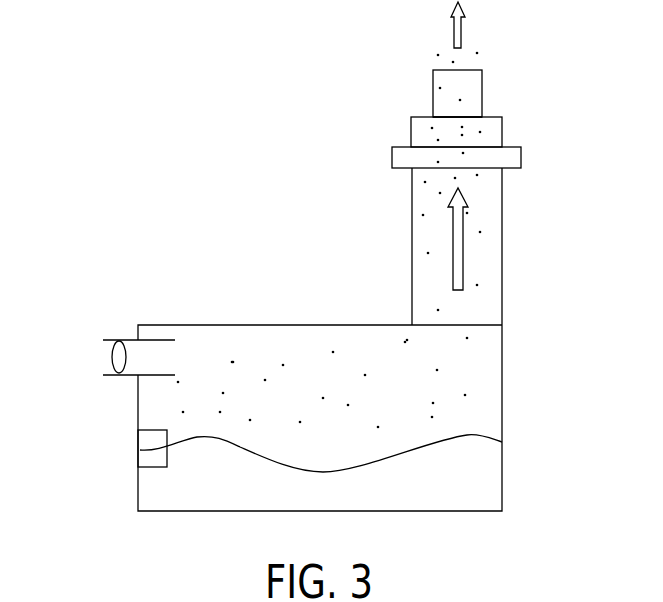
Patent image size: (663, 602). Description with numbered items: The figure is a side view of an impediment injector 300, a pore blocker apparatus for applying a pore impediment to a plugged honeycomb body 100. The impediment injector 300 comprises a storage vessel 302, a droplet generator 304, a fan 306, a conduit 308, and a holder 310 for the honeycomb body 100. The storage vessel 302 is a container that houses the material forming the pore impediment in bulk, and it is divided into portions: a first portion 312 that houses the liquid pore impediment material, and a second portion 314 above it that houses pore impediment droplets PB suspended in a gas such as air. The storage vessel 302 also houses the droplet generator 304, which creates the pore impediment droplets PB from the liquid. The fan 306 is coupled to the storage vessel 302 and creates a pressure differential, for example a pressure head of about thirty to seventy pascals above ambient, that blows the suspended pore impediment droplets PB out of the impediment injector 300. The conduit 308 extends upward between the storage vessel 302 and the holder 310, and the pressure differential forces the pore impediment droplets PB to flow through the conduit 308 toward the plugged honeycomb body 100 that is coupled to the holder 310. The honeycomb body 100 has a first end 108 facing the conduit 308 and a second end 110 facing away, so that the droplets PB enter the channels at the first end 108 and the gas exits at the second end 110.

The impediment injector 300 is at (104, 165).
The plugged honeycomb body 100 is at (472, 87).
The first end 108 is at (445, 117).
The second end 110 is at (438, 68).
The holder 310 is at (492, 132).
The conduit 308 is at (412, 272).
The storage vessel 302 is at (503, 368).
The droplet generator 304 is at (148, 443).
The fan 306 is at (112, 358).
The first portion 312 is at (488, 480).
The second portion 314 is at (488, 410).
The pore impediment droplets PB is at (489, 348).